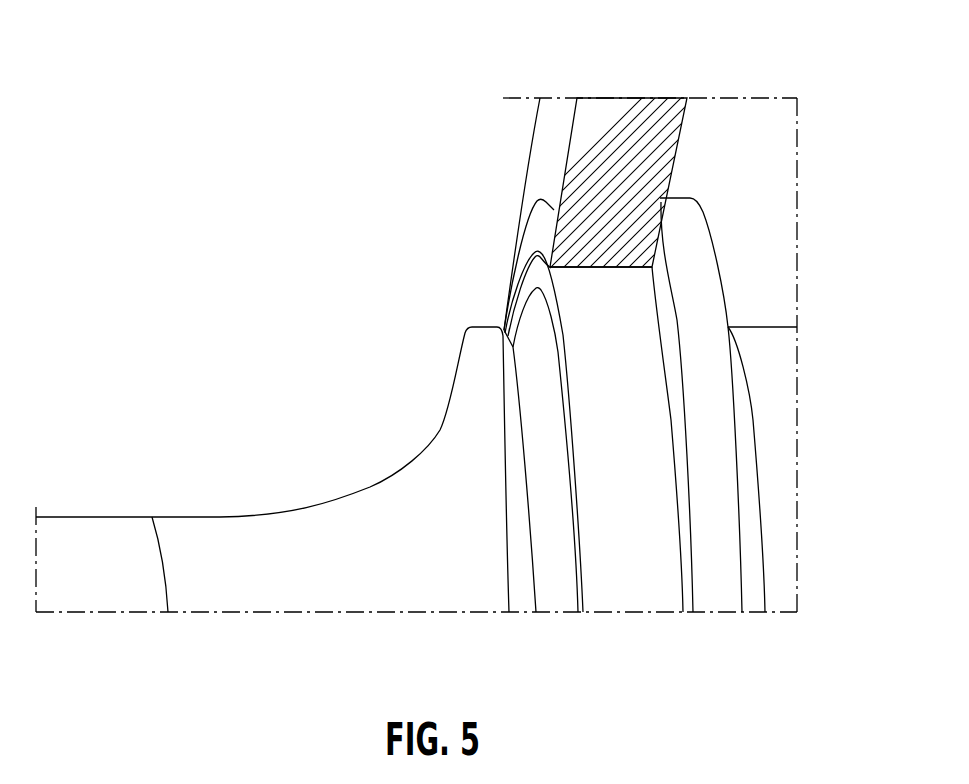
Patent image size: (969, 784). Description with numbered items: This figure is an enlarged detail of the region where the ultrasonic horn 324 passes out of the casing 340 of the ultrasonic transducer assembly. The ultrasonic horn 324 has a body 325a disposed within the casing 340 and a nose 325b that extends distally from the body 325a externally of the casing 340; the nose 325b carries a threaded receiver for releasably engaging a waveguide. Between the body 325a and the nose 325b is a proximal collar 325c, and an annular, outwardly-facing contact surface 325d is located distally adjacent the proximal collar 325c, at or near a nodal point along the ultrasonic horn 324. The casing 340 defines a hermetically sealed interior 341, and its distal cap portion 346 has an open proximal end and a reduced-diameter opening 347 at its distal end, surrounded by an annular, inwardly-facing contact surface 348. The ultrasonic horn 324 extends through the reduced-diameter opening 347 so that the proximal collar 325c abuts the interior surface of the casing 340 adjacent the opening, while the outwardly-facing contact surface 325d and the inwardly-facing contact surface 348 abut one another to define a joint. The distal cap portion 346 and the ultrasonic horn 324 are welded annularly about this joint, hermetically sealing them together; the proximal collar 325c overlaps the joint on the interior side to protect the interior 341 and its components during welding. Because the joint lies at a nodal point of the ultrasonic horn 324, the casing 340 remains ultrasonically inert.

The ultrasonic horn 324 is at (230, 502).
The body 325a is at (785, 387).
The nose 325b is at (352, 520).
The proximal collar 325c is at (707, 292).
The annular, outwardly-facing contact surface 325d is at (640, 597).
The casing 340 is at (568, 90).
The interior 341 is at (782, 172).
The distal cap portion 346 is at (530, 150).
The reduced-diameter opening 347 is at (547, 256).
The annular, inwardly-facing contact surface 348 is at (612, 259).